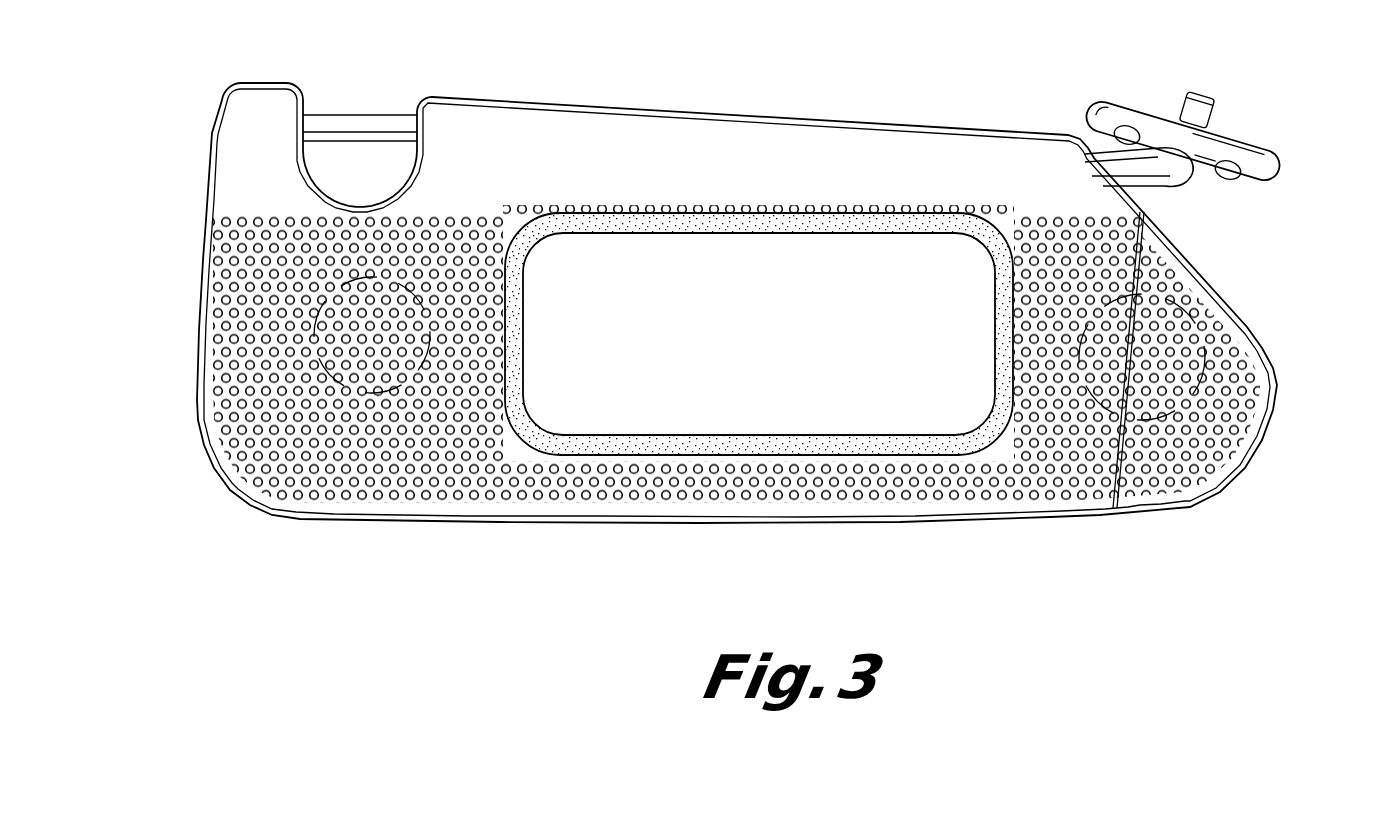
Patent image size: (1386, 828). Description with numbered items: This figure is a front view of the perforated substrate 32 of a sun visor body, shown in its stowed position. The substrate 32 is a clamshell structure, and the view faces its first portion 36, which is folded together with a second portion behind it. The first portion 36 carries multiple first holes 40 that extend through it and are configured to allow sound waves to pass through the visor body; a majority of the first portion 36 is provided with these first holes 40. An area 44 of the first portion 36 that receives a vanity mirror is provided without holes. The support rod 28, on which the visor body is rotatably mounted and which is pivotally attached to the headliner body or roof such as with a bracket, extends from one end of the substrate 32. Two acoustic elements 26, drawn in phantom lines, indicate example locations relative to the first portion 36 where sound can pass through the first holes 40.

The perforated substrate 32 is at (160, 157).
The acoustic elements 26 is at (215, 335).
The support rod 28 is at (1170, 190).
The first portion 36 is at (1250, 476).
The first holes 40 is at (232, 298).
The area 44 is at (865, 267).